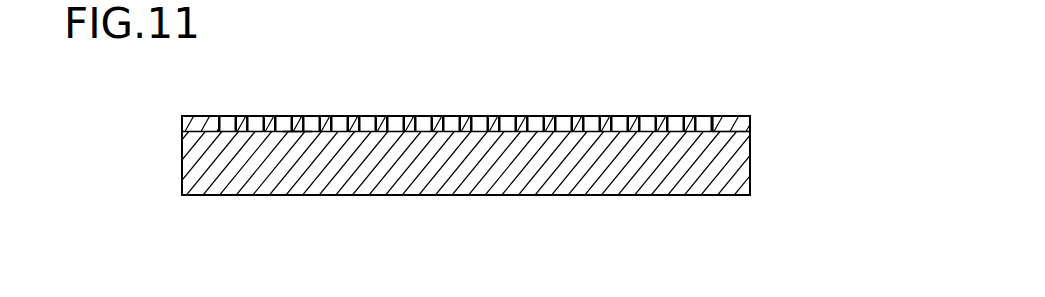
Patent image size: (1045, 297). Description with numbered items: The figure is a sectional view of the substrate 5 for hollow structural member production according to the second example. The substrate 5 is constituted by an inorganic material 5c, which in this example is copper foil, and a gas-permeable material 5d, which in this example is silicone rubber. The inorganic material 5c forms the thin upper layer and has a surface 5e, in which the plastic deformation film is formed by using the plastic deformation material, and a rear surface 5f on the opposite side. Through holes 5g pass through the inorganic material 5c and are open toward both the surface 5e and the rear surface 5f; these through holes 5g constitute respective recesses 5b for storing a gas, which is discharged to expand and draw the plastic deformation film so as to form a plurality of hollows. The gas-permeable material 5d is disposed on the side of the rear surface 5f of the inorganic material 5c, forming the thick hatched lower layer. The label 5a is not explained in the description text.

The substrate 5 is at (170, 113).
The upper layer 5a is at (468, 85).
The surface 5e is at (468, 85).
The through holes 5g is at (468, 85).
The recesses 5b is at (303, 113).
The inorganic material 5c is at (733, 113).
The gas-permeable material 5d is at (481, 172).
The rear surface 5f is at (296, 132).